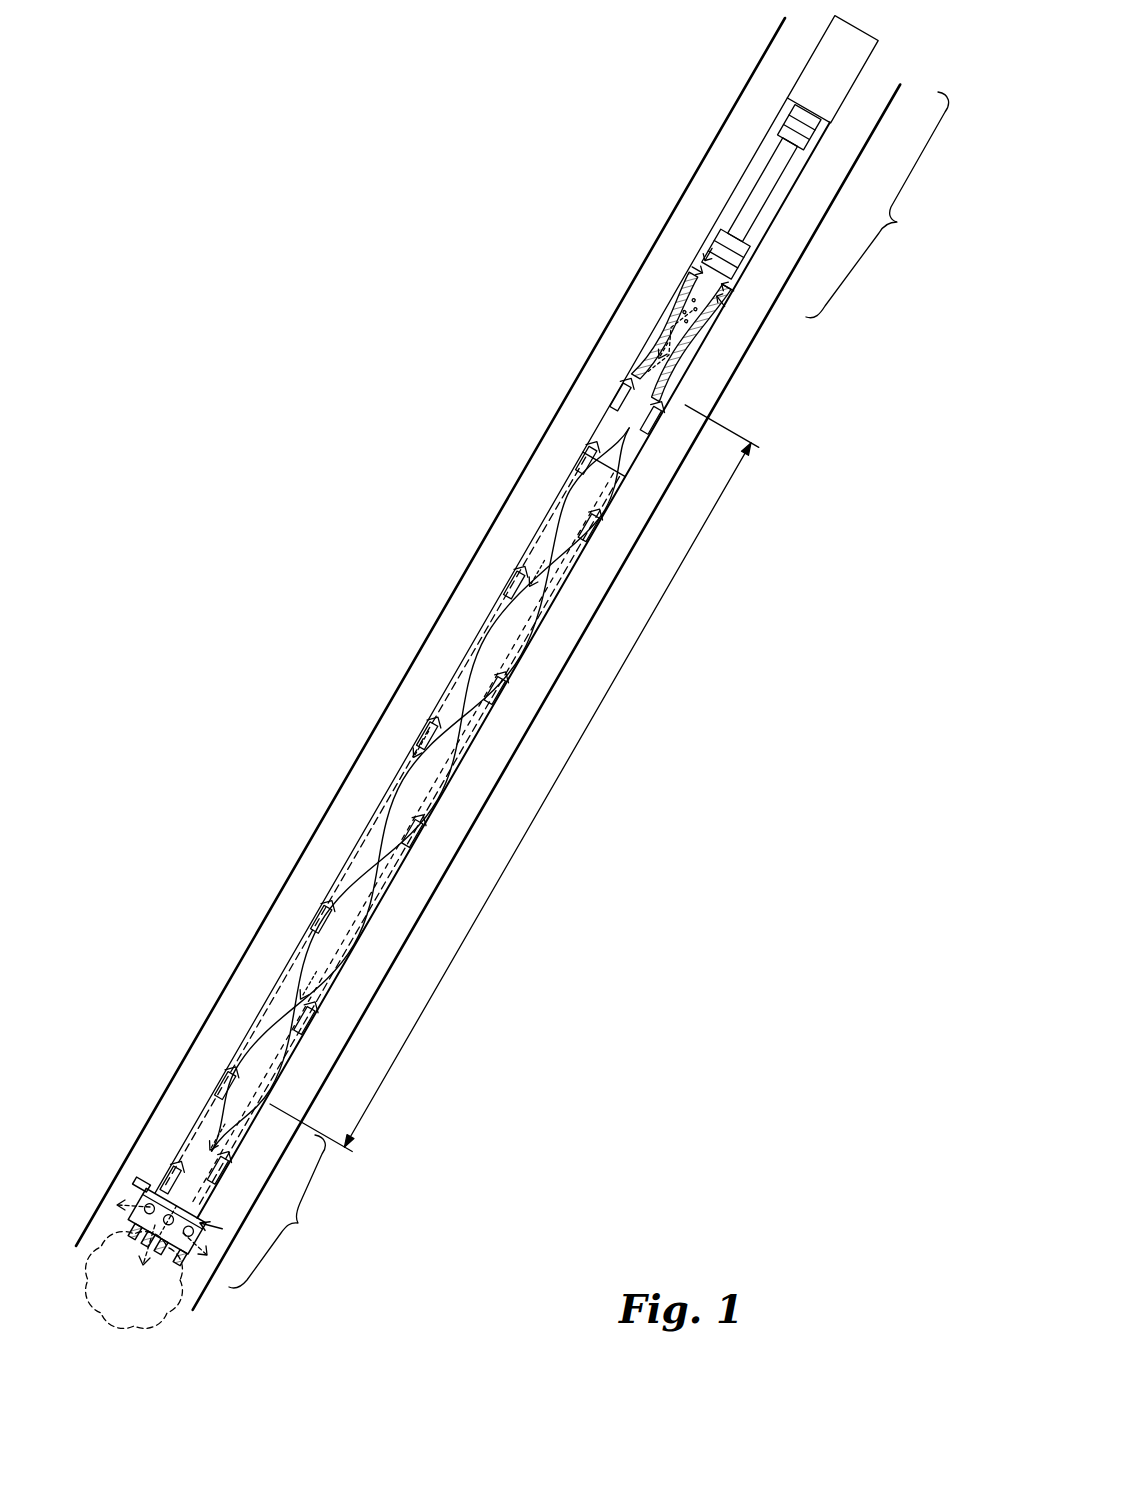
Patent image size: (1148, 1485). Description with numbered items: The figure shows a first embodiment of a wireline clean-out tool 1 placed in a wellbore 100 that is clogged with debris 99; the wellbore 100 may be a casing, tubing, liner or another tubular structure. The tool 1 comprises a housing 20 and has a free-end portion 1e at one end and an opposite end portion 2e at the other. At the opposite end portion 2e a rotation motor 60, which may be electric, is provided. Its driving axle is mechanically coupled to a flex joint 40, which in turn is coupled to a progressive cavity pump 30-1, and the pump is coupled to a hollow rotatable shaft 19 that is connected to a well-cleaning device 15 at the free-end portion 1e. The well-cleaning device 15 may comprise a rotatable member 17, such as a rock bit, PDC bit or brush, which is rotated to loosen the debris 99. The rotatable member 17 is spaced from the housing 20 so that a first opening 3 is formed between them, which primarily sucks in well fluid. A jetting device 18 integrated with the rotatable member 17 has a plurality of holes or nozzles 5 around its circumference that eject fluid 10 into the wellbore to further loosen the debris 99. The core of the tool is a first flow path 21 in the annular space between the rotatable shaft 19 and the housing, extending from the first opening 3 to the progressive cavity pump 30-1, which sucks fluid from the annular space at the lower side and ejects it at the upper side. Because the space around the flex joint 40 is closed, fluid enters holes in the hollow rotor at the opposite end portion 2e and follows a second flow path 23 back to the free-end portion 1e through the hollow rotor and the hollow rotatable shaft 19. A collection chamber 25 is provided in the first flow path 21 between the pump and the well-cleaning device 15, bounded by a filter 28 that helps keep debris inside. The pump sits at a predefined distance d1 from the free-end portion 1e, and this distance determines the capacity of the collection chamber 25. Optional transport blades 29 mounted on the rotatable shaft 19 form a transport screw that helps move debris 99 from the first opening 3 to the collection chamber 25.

The wireline clean-out tool 1 is at (393, 292).
The wellbore 100 is at (775, 36).
The rotation motor 60 is at (805, 83).
The flex joint 40 is at (762, 183).
The housing 20 is at (602, 418).
The progressive cavity pump 30-1 is at (650, 327).
The first flow path 21 is at (687, 368).
The second flow path 23 is at (662, 296).
The filter 28 is at (570, 477).
The collection chamber 25 is at (533, 553).
The hollow rotatable shaft 19 is at (433, 765).
The transport blades 29 is at (493, 632).
The ejected fluid 10 is at (128, 1213).
The first opening 3 is at (176, 1200).
The holes (nozzles) 5 is at (148, 1206).
The well-cleaning device 15 is at (168, 1205).
The jetting device 18 is at (173, 1211).
The rotatable member 17 is at (173, 1233).
The debris 99 is at (133, 1313).
The predefined distance d1 is at (514, 776).
The free-end portion 1e is at (278, 1211).
The opposite end portion 2e is at (877, 205).